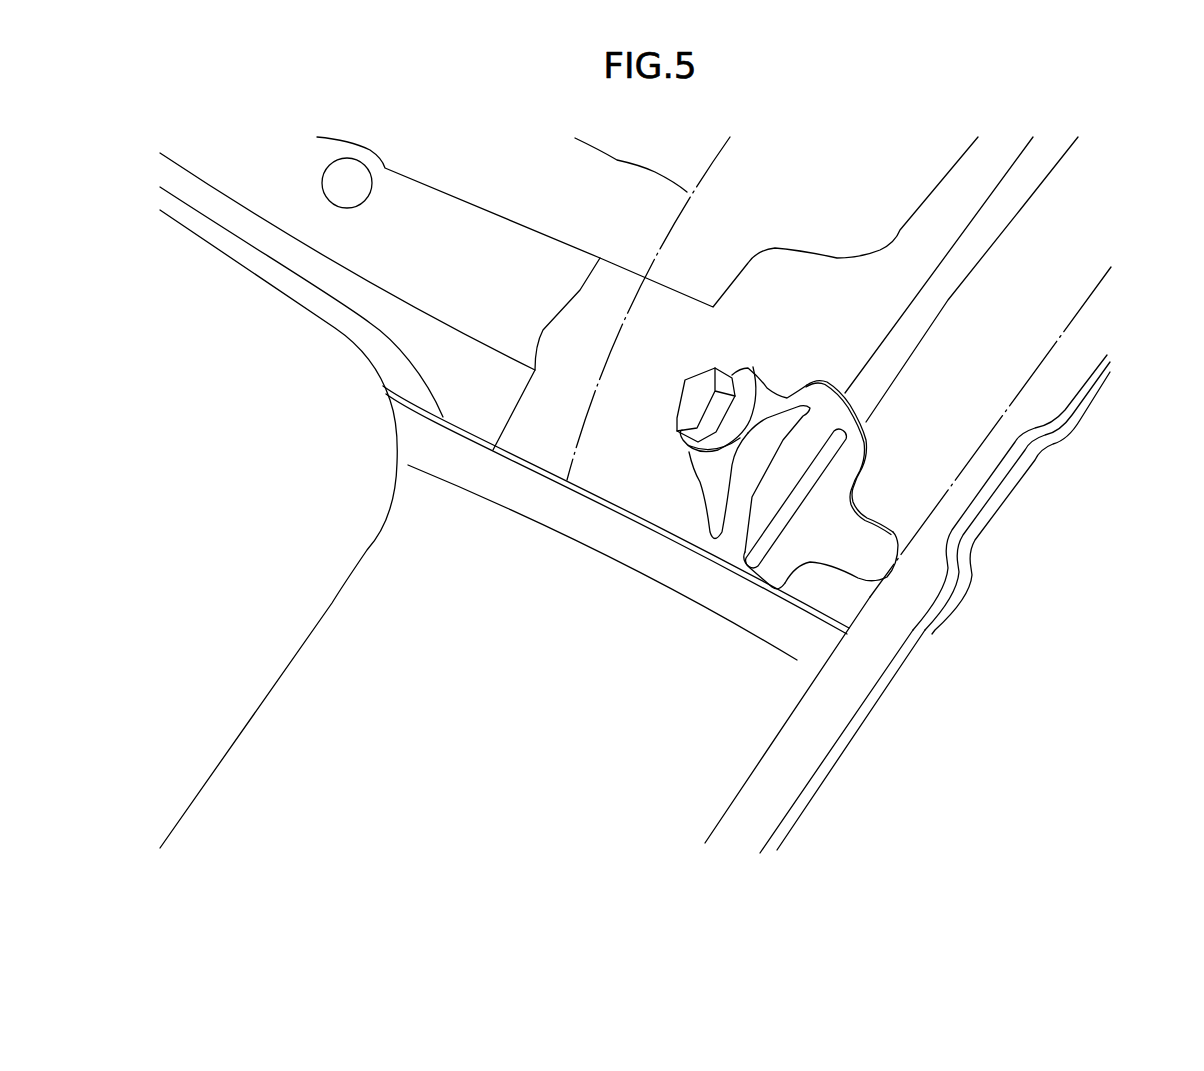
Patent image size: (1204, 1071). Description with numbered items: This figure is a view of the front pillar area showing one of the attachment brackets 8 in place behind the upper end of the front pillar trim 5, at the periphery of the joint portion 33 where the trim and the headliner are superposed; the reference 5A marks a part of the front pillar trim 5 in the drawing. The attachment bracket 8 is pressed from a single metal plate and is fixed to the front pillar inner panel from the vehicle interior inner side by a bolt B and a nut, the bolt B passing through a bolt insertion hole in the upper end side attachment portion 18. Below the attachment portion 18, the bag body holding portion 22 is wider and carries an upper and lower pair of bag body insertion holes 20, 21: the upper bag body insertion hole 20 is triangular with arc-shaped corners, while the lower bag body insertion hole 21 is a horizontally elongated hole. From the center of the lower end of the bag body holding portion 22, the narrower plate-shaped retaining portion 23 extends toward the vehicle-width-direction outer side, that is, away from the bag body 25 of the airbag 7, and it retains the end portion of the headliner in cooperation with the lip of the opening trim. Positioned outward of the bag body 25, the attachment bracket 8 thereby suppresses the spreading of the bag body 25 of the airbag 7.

The front pillar trim 5 is at (392, 553).
The side sill 5A is at (435, 455).
The airbag 7 is at (1017, 496).
The attachment bracket 8 is at (815, 445).
The upper end side attachment portion 18 is at (752, 368).
The bag body insertion hole 20 is at (774, 428).
The bag body insertion hole 21 is at (818, 475).
The bag body holding portion 22 is at (853, 404).
The retaining portion 23 is at (873, 558).
The bag body 25 is at (946, 555).
The joint portion 33 is at (938, 655).
The bolt B is at (688, 410).